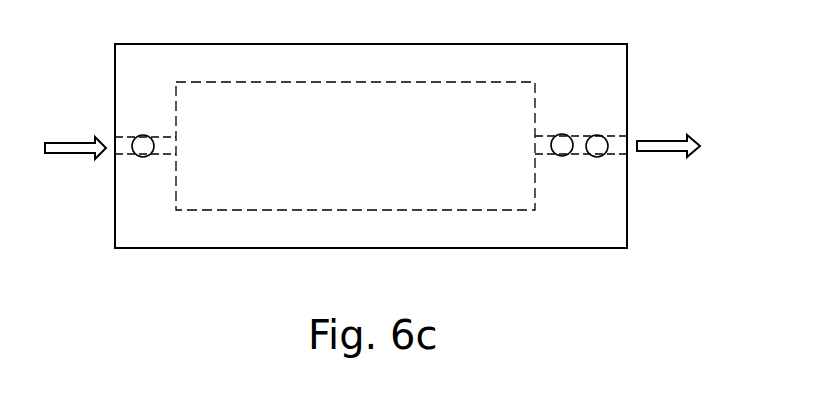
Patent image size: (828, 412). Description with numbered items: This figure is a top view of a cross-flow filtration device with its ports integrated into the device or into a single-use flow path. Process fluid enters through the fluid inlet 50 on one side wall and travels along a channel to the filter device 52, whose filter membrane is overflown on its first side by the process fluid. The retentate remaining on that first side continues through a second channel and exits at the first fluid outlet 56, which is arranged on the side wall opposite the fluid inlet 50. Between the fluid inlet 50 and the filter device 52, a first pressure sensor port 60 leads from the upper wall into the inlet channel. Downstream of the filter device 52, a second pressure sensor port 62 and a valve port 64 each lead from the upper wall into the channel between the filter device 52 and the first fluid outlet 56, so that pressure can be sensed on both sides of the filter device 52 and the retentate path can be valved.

The fluid inlet 50 is at (115, 155).
The filter device 52 is at (356, 149).
The first fluid outlet 56 is at (627, 136).
The first pressure sensor port 60 is at (143, 147).
The second pressure sensor port 62 is at (563, 144).
The valve port 64 is at (597, 146).